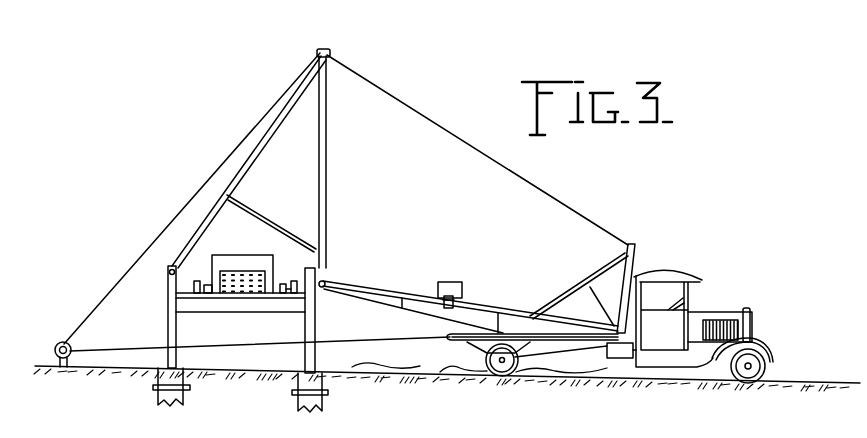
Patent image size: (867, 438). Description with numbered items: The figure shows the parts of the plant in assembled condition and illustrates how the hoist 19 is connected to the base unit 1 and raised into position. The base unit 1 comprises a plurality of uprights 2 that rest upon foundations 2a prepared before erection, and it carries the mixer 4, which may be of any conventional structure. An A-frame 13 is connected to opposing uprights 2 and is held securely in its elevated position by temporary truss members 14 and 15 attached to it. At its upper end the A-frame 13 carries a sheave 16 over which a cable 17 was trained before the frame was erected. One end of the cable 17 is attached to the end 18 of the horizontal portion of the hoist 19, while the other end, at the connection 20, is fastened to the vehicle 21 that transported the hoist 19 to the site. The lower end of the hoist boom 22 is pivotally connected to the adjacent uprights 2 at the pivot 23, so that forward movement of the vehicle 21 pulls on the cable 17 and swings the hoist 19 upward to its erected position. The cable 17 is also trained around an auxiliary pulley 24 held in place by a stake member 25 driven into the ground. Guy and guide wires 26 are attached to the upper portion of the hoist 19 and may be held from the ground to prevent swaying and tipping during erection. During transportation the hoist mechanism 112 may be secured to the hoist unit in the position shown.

The base unit 1 is at (236, 301).
The uprights 2 is at (168, 331).
The foundations 2a is at (183, 402).
The mixer 4 is at (251, 262).
The A-frame 13 is at (330, 161).
The temporary truss member 14 is at (273, 124).
The temporary truss member 15 is at (282, 226).
The sheave 16 is at (333, 54).
The cable 17 is at (146, 250).
The end of horizontal portion of hoist 18 is at (636, 256).
The hoist 19 is at (513, 312).
The cable end connection 20 is at (448, 342).
The vehicle 21 is at (623, 359).
The hoist boom 22 is at (392, 300).
The pivotal connection 23 is at (326, 283).
The auxiliary pulley 24 is at (66, 342).
The stake member 25 is at (71, 350).
The guy and guide wires 26 is at (555, 373).
The hoist mechanism 112 is at (465, 292).